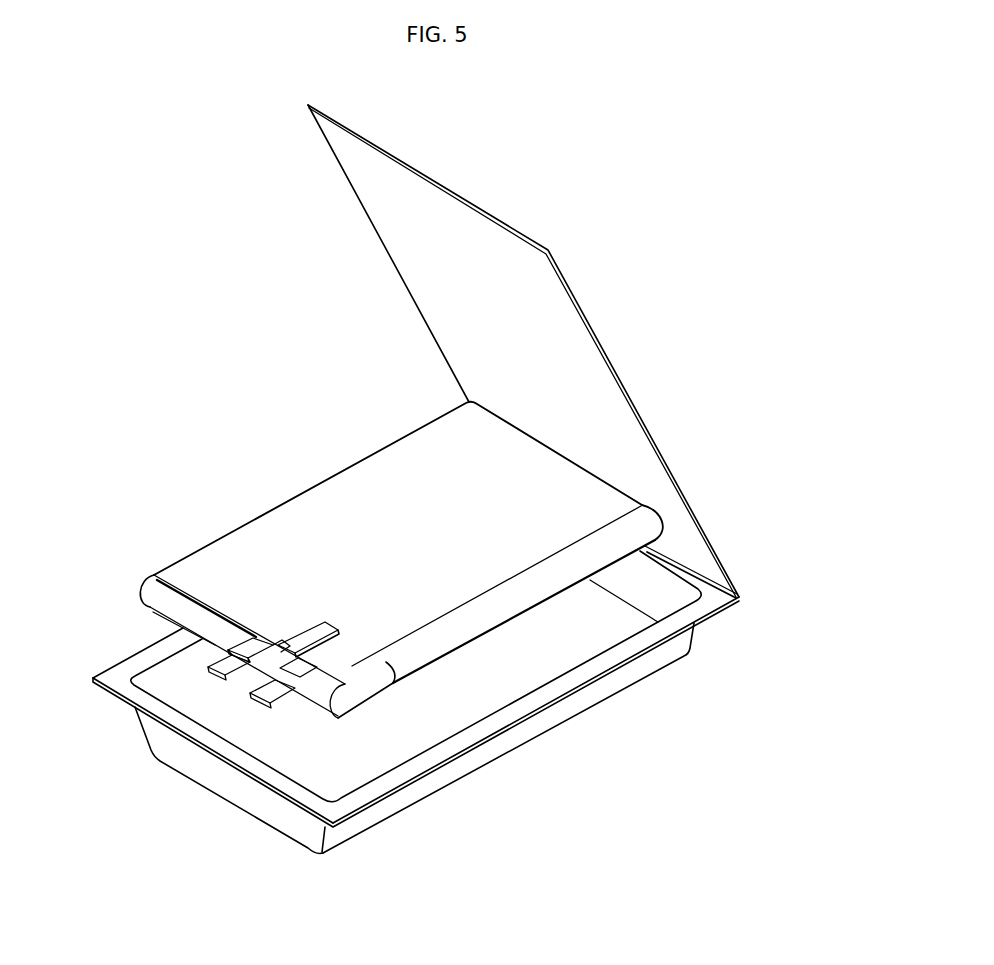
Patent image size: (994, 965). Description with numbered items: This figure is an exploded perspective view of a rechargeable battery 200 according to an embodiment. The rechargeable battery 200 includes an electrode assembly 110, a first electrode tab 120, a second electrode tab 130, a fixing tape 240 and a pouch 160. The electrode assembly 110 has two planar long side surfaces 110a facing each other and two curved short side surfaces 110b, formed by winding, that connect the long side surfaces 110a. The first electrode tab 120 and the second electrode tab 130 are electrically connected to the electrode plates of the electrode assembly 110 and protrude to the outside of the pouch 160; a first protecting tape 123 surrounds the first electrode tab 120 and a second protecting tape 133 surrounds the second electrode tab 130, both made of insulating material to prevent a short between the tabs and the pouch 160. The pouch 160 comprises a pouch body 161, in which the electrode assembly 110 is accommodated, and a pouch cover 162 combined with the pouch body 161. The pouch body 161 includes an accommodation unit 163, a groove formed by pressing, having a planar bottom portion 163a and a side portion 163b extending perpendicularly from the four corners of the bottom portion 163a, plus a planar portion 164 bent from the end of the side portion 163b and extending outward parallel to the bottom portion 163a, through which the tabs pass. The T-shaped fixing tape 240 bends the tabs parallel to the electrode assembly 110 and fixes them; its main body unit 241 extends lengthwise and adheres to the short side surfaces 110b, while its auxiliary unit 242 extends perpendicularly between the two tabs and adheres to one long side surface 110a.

The electrode assembly 110 is at (223, 515).
The long side surfaces 110a is at (367, 508).
The short side surfaces 110b is at (598, 547).
The first electrode tab 120 is at (152, 680).
The first protecting tape 123 is at (296, 684).
The second electrode tab 130 is at (210, 626).
The second protecting tape 133 is at (240, 646).
The pouch 160 is at (822, 552).
The pouch body 161 is at (706, 602).
The pouch cover 162 is at (703, 567).
The accommodation unit 163 is at (665, 767).
The bottom portion 163a is at (398, 741).
The side portion 163b is at (564, 708).
The planar portion 164 is at (292, 790).
The rechargeable battery 200 is at (706, 158).
The fixing tape 240 is at (148, 586).
The main body unit 241 is at (212, 615).
The auxiliary unit 242 is at (329, 624).